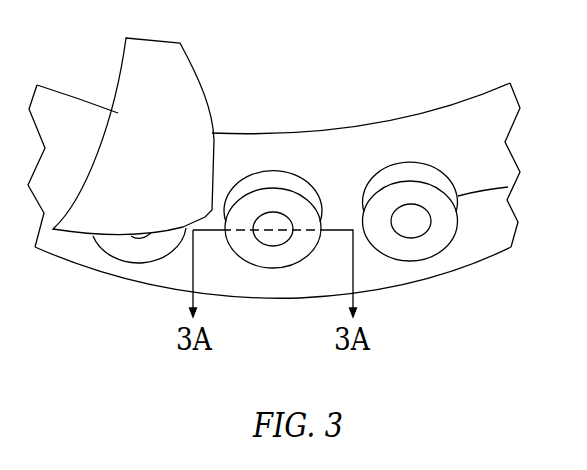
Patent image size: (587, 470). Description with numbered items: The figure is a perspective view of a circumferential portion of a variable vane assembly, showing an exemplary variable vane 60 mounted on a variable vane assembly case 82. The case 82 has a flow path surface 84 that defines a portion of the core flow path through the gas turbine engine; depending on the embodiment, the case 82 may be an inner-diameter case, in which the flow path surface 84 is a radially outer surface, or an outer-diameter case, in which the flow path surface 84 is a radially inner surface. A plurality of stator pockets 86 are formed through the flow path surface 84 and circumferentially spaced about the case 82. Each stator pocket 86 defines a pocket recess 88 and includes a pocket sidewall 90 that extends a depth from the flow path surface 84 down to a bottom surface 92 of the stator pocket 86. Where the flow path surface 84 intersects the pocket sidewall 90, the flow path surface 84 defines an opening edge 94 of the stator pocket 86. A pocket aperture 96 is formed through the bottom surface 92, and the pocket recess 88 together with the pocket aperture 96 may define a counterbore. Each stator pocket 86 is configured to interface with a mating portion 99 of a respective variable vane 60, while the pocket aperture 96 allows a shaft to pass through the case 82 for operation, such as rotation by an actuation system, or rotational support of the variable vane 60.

The variable vane 60 is at (140, 90).
The variable vane assembly case 82 is at (318, 113).
The flow path surface 84 is at (392, 277).
The stator pocket 86 is at (258, 195).
The pocket recess 88 is at (400, 200).
The pocket sidewall 90 is at (277, 173).
The bottom surface 92 is at (444, 235).
The opening edge 94 is at (508, 187).
The pocket aperture 96 is at (270, 238).
The mating portion 99 is at (127, 250).